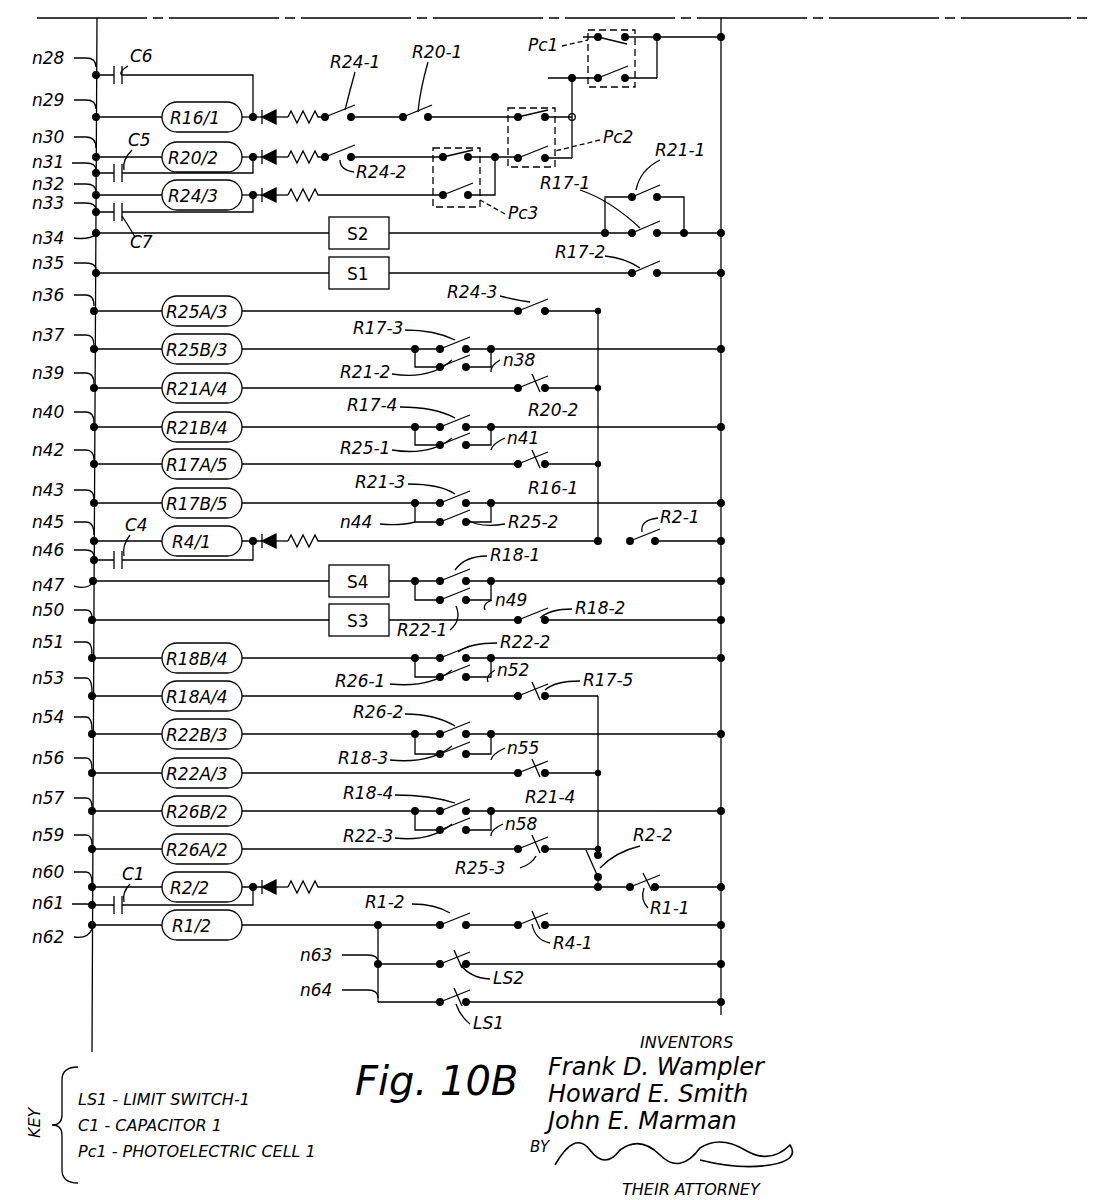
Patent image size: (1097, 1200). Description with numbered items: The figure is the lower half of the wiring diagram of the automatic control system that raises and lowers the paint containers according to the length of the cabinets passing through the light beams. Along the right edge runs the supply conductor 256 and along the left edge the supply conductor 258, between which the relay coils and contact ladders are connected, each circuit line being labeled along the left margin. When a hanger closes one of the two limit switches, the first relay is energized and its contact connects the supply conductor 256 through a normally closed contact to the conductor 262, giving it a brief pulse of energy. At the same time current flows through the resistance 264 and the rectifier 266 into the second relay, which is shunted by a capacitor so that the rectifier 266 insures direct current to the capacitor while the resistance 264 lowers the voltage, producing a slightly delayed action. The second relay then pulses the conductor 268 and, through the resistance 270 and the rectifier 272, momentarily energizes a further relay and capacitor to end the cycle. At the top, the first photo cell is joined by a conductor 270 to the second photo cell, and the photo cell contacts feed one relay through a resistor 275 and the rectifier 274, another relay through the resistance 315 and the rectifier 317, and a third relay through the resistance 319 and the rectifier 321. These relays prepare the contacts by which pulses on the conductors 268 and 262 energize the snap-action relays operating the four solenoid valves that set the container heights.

The supply conductor 256 is at (721, 690).
The supply conductor 258 is at (92, 992).
The conductor 262 is at (600, 764).
The resistance 264 is at (318, 880).
The rectifier 266 is at (272, 876).
The conductor 268 is at (600, 457).
The resistance 270 is at (574, 102).
The rectifier 272 is at (270, 532).
The rectifier 274 is at (272, 106).
The resistor 275 is at (307, 108).
The resistance 315 is at (308, 150).
The rectifier 317 is at (272, 150).
The resistance 319 is at (318, 194).
The rectifier 321 is at (270, 204).